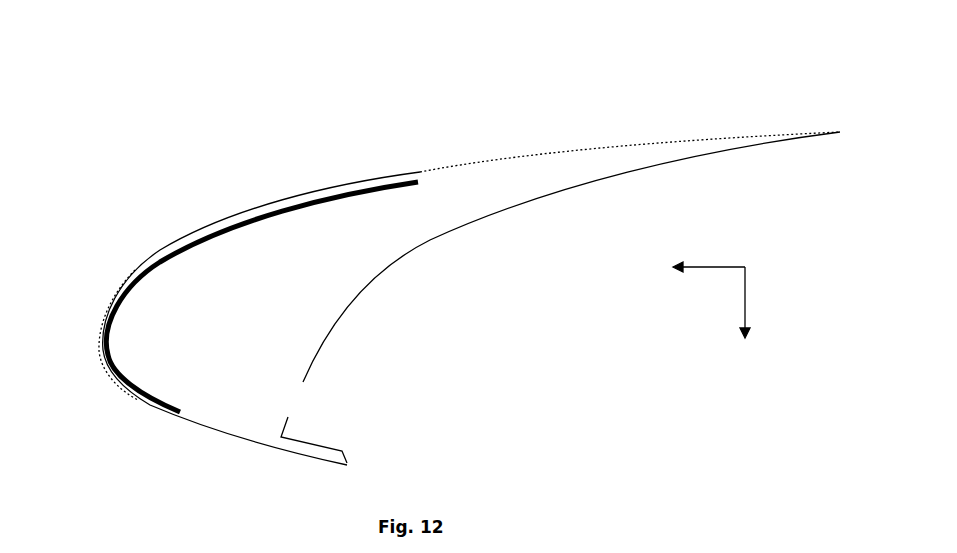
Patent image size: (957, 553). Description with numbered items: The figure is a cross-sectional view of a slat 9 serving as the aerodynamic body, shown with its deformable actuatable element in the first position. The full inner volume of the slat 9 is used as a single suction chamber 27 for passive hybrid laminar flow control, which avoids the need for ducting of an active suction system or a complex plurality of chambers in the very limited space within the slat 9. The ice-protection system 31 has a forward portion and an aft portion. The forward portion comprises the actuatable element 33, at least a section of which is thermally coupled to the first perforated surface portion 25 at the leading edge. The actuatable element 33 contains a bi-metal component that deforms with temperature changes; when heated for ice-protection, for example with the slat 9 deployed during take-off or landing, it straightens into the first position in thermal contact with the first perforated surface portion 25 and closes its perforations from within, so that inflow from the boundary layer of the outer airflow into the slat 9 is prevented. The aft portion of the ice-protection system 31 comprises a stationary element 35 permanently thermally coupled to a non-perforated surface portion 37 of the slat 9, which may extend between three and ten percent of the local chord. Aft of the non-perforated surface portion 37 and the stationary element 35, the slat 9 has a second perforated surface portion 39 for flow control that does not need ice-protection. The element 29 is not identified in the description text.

The slat 9 is at (640, 76).
The first perforated surface portion 25 is at (118, 295).
The suction chamber 27 is at (230, 378).
The inner surface 29 is at (295, 400).
The ice-protection system 31 is at (170, 270).
The actuatable element 33 is at (113, 363).
The stationary element 35 is at (268, 223).
The non-perforated surface portion 37 is at (304, 194).
The second perforated surface portion 39 is at (490, 160).